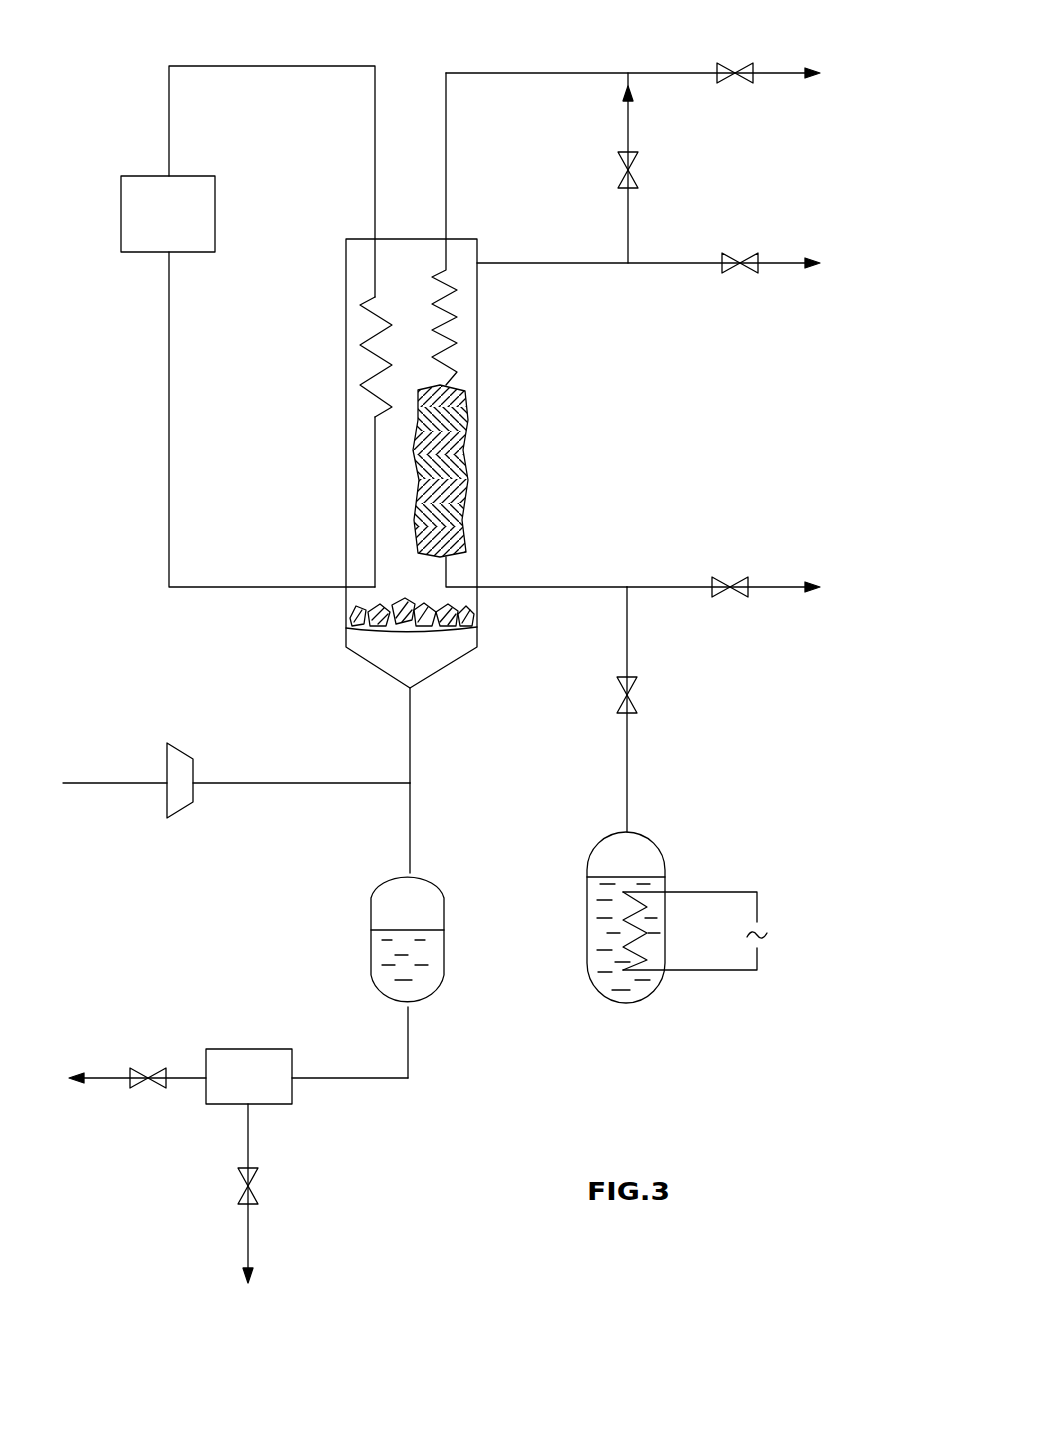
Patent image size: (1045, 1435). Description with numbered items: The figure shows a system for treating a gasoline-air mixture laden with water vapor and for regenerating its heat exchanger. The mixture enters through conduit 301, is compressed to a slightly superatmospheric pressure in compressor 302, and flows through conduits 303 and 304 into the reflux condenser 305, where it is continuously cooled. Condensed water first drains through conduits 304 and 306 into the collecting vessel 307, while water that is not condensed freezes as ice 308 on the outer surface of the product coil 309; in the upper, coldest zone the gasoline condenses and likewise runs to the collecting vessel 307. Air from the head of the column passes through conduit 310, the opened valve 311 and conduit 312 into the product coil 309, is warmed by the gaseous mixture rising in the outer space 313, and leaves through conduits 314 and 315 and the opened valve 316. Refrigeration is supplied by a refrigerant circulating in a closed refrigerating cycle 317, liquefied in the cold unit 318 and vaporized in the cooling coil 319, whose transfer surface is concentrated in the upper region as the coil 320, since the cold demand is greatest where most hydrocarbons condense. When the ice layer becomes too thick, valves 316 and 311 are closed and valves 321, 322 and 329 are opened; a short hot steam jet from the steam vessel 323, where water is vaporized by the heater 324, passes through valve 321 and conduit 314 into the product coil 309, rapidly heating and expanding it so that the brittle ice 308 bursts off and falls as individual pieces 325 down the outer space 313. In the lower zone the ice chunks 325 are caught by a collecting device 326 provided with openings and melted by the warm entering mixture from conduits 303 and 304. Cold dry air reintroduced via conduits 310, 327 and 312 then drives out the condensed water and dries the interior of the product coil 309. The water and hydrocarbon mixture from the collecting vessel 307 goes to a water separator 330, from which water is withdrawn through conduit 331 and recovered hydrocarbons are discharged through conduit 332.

The conduit 301 is at (123, 785).
The compressor 302 is at (180, 758).
The conduit 303 is at (283, 787).
The conduit 304 is at (415, 755).
The reflux condenser 305 is at (478, 413).
The conduit 306 is at (410, 820).
The collecting vessel 307 is at (437, 950).
The ice 308 is at (452, 470).
The product coil 309 is at (455, 330).
The conduit 310 is at (565, 265).
The valve 311 is at (638, 165).
The conduit 312 is at (555, 73).
The outer space 313 is at (418, 365).
The conduit 314 is at (555, 585).
The conduit 315 is at (677, 585).
The valve 316 is at (737, 600).
The closed refrigerating cycle 317 is at (160, 111).
The cold unit 318 is at (215, 213).
The cooling coil 319 is at (372, 480).
The coil 320 is at (372, 338).
The valve 321 is at (637, 700).
The valve 322 is at (735, 83).
The steam vessel 323 is at (586, 896).
The heater 324 is at (710, 972).
The ice pieces 325 is at (437, 606).
The collecting device 326 is at (452, 630).
The conduit 327 is at (628, 225).
The valve 329 is at (745, 275).
The water separator 330 is at (263, 1057).
The conduit 331 is at (248, 1230).
The conduit 332 is at (110, 1075).